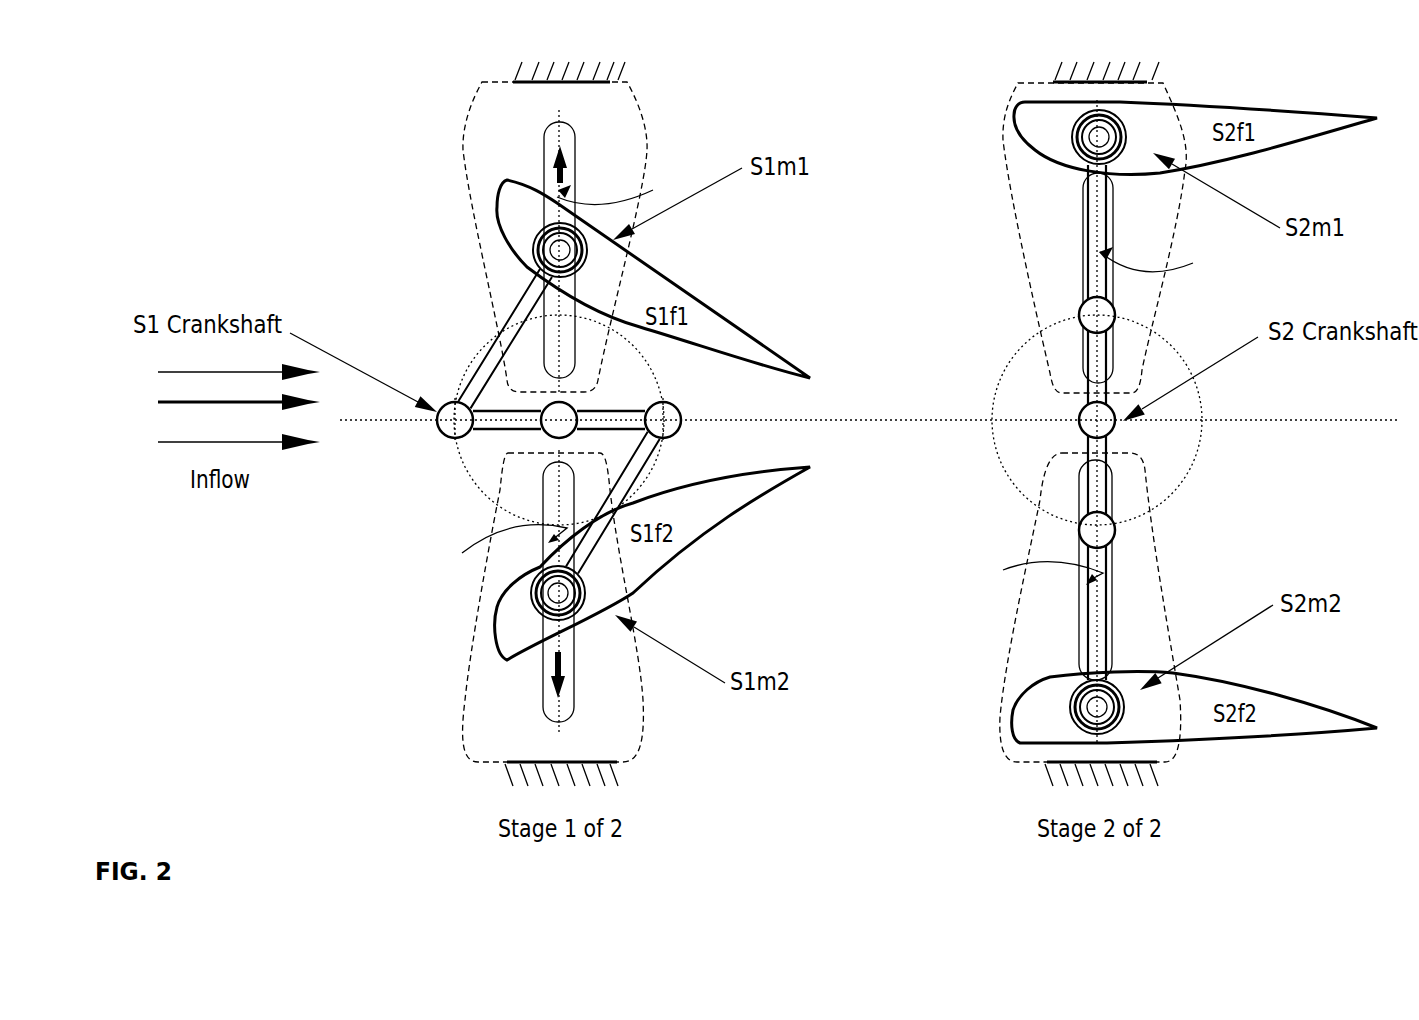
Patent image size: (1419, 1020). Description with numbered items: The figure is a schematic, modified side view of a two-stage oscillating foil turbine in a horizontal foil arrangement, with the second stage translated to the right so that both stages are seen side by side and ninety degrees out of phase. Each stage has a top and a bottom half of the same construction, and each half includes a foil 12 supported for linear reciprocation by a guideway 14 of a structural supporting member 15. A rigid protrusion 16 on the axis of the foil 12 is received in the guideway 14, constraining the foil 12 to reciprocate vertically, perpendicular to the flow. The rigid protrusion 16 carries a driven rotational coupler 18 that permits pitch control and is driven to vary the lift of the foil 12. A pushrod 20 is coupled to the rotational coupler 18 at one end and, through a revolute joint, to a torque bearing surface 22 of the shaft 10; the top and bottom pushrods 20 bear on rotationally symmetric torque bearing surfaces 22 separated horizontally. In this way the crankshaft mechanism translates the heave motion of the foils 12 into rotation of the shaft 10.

The shaft 10 is at (557, 450).
The foil 12 is at (730, 346).
The guideway 14 is at (829, 386).
The structural supporting member 15 is at (527, 135).
The rigid protrusion 16 is at (560, 250).
The driven rotational coupler 18 is at (533, 254).
The pushrod 20 is at (495, 358).
The torque bearing surface 22 is at (677, 416).